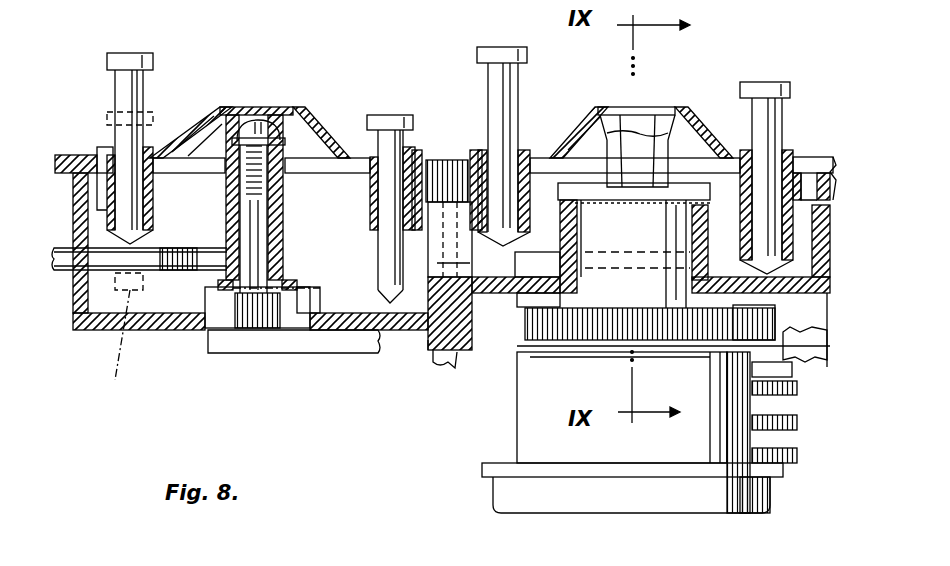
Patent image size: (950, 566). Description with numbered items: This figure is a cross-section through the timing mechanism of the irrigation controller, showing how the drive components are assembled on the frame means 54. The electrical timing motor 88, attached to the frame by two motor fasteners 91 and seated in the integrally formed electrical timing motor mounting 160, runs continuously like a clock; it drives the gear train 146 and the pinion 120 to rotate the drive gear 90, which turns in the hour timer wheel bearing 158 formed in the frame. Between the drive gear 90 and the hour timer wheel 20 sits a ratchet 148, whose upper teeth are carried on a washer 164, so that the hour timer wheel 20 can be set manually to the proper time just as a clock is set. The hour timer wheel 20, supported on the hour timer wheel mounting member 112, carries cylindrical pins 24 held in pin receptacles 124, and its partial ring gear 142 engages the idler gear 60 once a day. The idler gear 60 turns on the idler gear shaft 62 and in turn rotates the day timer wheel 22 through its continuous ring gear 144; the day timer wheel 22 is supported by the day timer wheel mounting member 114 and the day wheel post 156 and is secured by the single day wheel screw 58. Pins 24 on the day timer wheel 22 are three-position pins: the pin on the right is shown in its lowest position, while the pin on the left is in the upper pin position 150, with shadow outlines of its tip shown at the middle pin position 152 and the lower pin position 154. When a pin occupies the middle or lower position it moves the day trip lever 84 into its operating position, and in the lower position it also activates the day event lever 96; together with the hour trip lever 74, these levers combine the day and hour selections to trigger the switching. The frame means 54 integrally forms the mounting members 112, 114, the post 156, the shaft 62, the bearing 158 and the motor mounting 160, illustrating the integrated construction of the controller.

The hour timer wheel 20 is at (690, 107).
The day timer wheel 22 is at (192, 117).
The pins 24 is at (130, 58).
The frame means 54 is at (817, 187).
The day wheel screw 58 is at (248, 128).
The idler gear 60 is at (448, 207).
The idler gear shaft 62 is at (437, 263).
The hour trip lever 74 is at (537, 257).
The day trip lever 84 is at (188, 252).
The electrical timing motor 88 is at (533, 442).
The drive gear 90 is at (623, 333).
The motor fasteners 91 is at (455, 373).
The day event lever 96 is at (323, 332).
The hour timer wheel mounting member 112 is at (545, 286).
The day timer wheel mounting member 114 is at (215, 330).
The pinion 120 is at (758, 327).
The pin receptacles 124 is at (73, 210).
The partial ring gear 142 is at (468, 160).
The continuous ring gear 144 is at (428, 167).
The gear train 146 is at (797, 437).
The ratchet 148 is at (600, 212).
The upper pin position 150 is at (132, 242).
The middle pin position 152 is at (145, 283).
The lower pin position 154 is at (109, 356).
The day wheel post 156 is at (293, 223).
The hour timer wheel bearing 158 is at (567, 333).
The electrical timing motor mounting 160 is at (427, 340).
The washer 164 is at (622, 190).